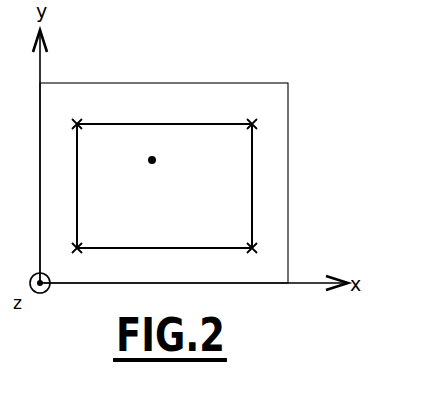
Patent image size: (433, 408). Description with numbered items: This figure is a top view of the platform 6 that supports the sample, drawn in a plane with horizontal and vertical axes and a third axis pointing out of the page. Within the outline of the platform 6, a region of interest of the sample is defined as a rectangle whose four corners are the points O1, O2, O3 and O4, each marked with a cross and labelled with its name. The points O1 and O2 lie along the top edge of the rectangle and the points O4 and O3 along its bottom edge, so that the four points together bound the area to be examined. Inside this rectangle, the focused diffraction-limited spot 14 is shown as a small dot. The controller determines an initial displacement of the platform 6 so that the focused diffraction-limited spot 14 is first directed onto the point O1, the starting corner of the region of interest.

The platform 6 is at (207, 83).
The focused diffraction-limited spot 14 is at (152, 157).
The point O1 is at (84, 111).
The point O2 is at (260, 111).
The point O3 is at (266, 250).
The point O4 is at (63, 248).